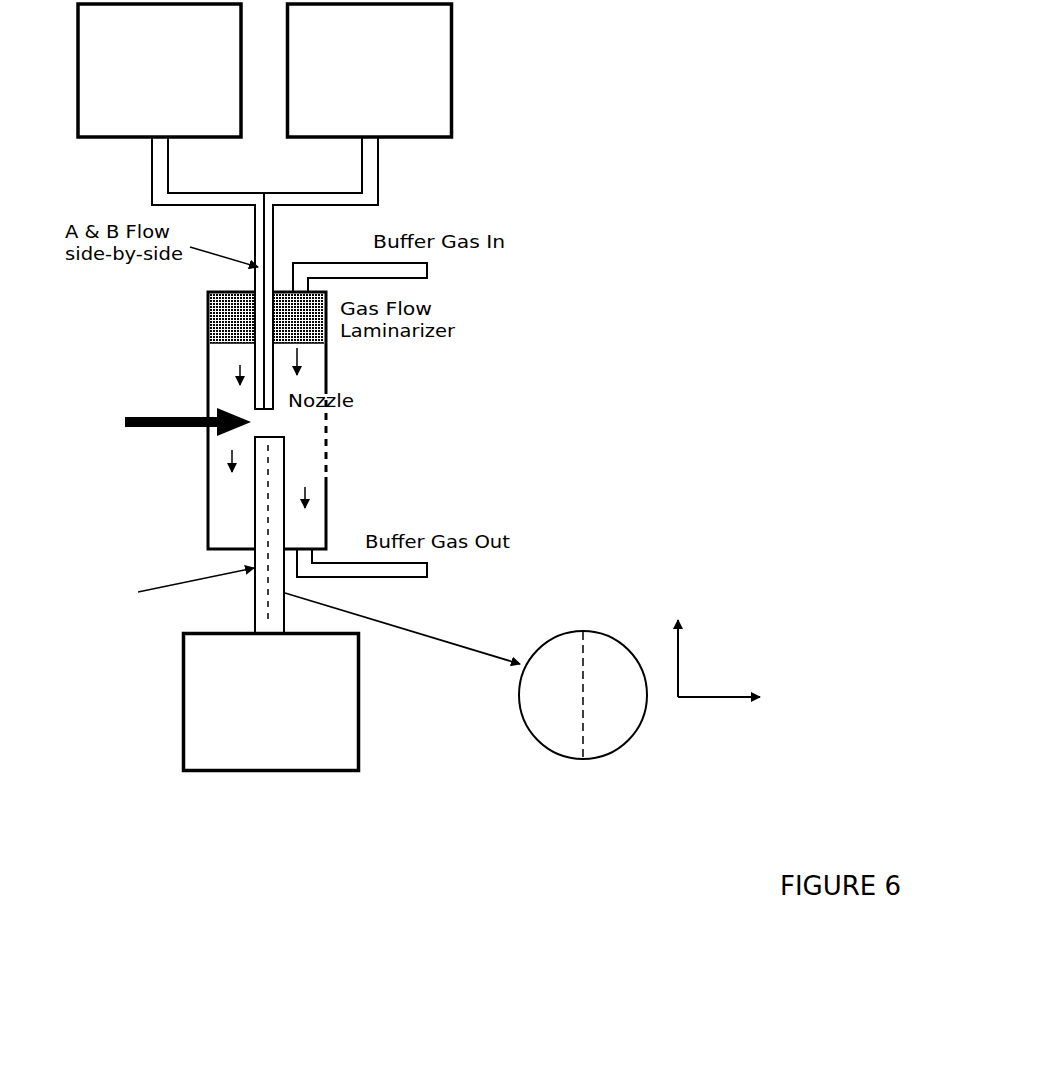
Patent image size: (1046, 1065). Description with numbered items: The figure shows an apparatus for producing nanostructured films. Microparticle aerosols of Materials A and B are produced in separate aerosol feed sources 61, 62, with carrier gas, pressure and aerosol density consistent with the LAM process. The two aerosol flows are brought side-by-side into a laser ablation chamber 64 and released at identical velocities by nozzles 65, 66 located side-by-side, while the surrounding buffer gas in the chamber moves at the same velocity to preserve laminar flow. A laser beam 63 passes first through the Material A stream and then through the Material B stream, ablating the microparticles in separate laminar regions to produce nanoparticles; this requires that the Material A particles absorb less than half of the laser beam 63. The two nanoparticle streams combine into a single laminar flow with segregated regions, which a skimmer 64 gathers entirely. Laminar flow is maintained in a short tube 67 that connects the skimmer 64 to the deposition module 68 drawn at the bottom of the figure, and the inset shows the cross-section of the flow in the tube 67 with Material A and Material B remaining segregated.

The aerosol feed source 61 is at (97, 122).
The aerosol feed source 62 is at (435, 120).
The laser beam 63 is at (125, 421).
The skimmer 64 is at (272, 455).
The nozzle 65 is at (258, 358).
The nozzle 66 is at (271, 357).
The short tube 67 is at (255, 603).
The deposition module 68 is at (343, 665).